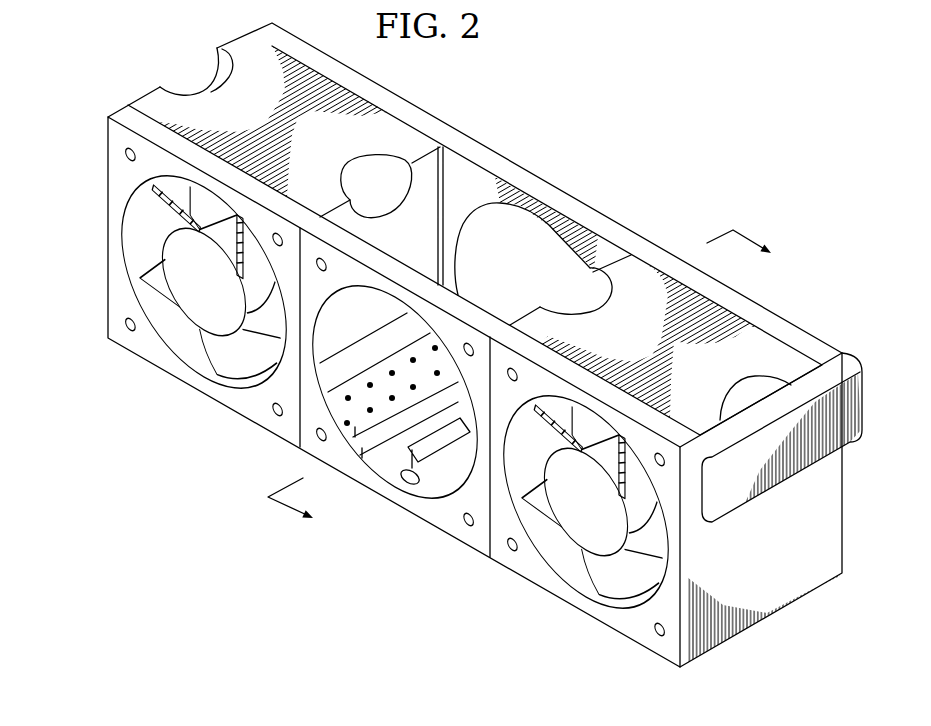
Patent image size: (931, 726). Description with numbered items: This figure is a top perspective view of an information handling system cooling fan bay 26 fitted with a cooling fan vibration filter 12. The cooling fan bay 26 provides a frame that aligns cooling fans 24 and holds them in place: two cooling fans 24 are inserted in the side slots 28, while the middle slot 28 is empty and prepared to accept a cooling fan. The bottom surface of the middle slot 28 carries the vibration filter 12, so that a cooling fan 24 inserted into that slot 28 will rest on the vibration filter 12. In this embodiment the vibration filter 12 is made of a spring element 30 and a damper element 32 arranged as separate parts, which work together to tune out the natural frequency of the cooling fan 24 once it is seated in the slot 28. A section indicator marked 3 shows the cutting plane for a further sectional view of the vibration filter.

The cooling fan vibration filter 12 is at (375, 350).
The cooling fan 24 is at (124, 241).
The cooling fan bay 26 is at (614, 183).
The slot 28 is at (503, 282).
The spring element 30 is at (457, 452).
The damper element 32 is at (336, 406).
The section line 3- 3 is at (532, 388).